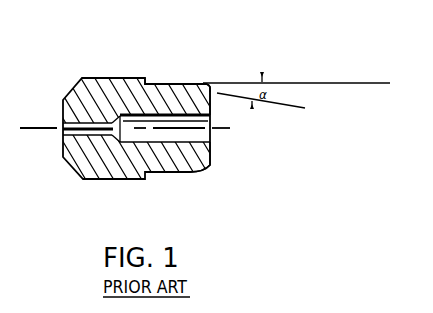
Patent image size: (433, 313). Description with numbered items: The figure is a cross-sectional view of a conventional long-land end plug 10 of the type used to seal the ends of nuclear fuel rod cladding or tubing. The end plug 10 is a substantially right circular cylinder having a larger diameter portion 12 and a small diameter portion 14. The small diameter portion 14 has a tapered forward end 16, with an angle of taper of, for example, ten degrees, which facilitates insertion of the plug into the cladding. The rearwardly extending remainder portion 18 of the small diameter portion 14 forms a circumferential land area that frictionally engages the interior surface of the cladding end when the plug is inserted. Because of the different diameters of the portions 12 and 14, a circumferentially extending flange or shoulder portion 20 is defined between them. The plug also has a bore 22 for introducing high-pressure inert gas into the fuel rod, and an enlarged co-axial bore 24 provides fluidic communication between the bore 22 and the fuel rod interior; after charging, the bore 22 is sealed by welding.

The end plug 10 is at (83, 39).
The larger diameter portion 12 is at (103, 90).
The small diameter portion 14 is at (168, 97).
The tapered forward end 16 is at (202, 85).
The rearwardly extending remainder portion 18 is at (173, 172).
The shoulder portion 20 is at (147, 85).
The bore 22 is at (73, 135).
The enlarged co-axial bore 24 is at (197, 137).